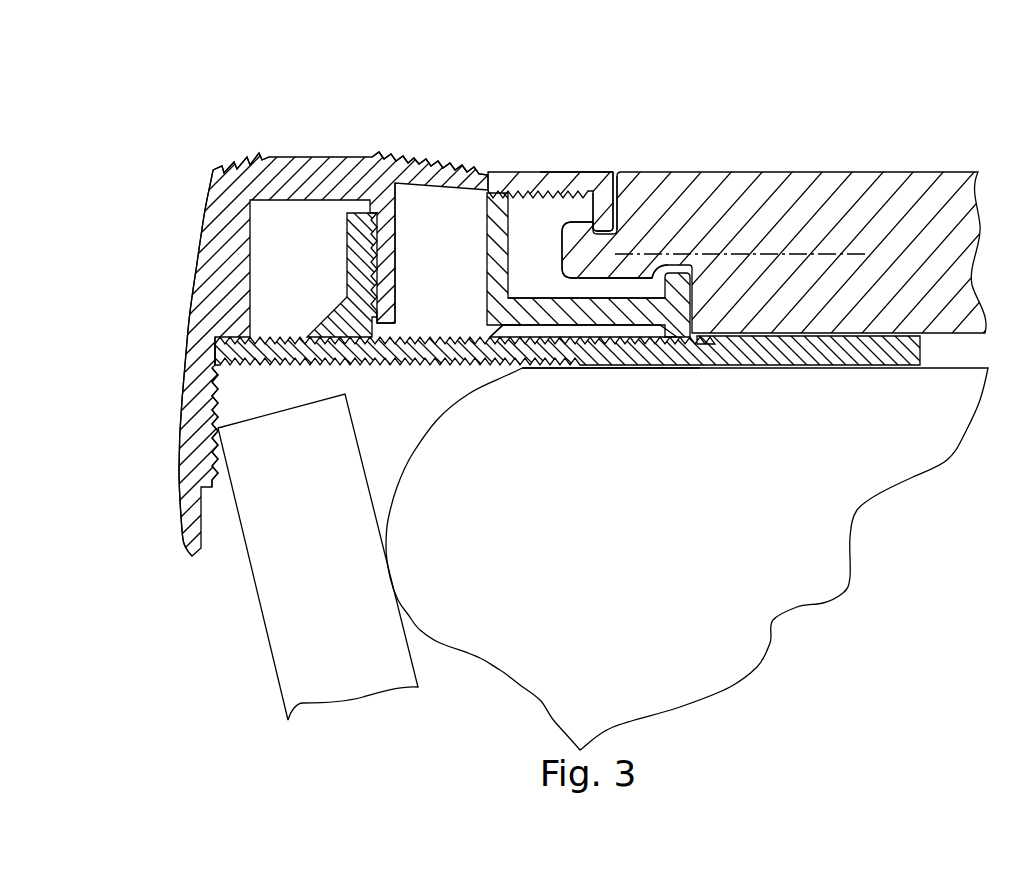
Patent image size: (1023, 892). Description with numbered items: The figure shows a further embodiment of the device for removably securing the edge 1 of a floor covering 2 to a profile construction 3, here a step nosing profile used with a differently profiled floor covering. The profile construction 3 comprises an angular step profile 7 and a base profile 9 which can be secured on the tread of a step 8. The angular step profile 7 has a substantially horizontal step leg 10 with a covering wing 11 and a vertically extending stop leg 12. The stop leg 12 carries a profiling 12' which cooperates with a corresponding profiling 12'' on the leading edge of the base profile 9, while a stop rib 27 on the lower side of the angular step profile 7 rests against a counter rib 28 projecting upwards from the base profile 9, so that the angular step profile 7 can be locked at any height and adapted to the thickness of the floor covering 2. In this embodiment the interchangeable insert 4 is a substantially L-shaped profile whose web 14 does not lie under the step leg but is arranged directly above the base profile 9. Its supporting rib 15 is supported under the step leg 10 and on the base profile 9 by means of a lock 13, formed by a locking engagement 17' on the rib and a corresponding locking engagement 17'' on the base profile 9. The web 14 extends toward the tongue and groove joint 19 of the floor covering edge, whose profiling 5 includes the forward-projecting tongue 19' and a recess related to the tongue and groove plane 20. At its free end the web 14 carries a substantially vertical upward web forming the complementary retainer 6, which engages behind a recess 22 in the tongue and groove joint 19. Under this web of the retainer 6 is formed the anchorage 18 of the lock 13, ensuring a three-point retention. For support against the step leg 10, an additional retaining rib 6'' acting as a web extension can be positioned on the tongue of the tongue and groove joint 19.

The edge 1 is at (681, 161).
The floor covering 2 is at (903, 156).
The profile construction 3 is at (234, 150).
The interchangeable insert 4 is at (532, 189).
The profiling 5 is at (695, 197).
The complementary retainer 6 is at (731, 262).
The retaining rib 6'' is at (643, 181).
The angular step profile 7 is at (184, 235).
The step 8 is at (668, 577).
The base profile 9 is at (528, 370).
The step leg 10 is at (377, 150).
The covering wing 11 is at (570, 172).
The stop leg 12 is at (482, 435).
The profiling 12' is at (167, 427).
The profiling 12'' is at (250, 370).
The lock 13 is at (491, 188).
The web 14 is at (600, 330).
The supporting rib 15 is at (484, 236).
The locking engagement 17' is at (434, 304).
The locking engagement 17'' is at (443, 361).
The anchorage 18 is at (716, 323).
The tongue and groove joint 19 is at (607, 250).
The tongue 19' is at (604, 180).
The tongue and groove plane 20 is at (860, 255).
The recess 22 is at (687, 320).
The stop rib 27 is at (390, 265).
The counter rib 28 is at (355, 255).